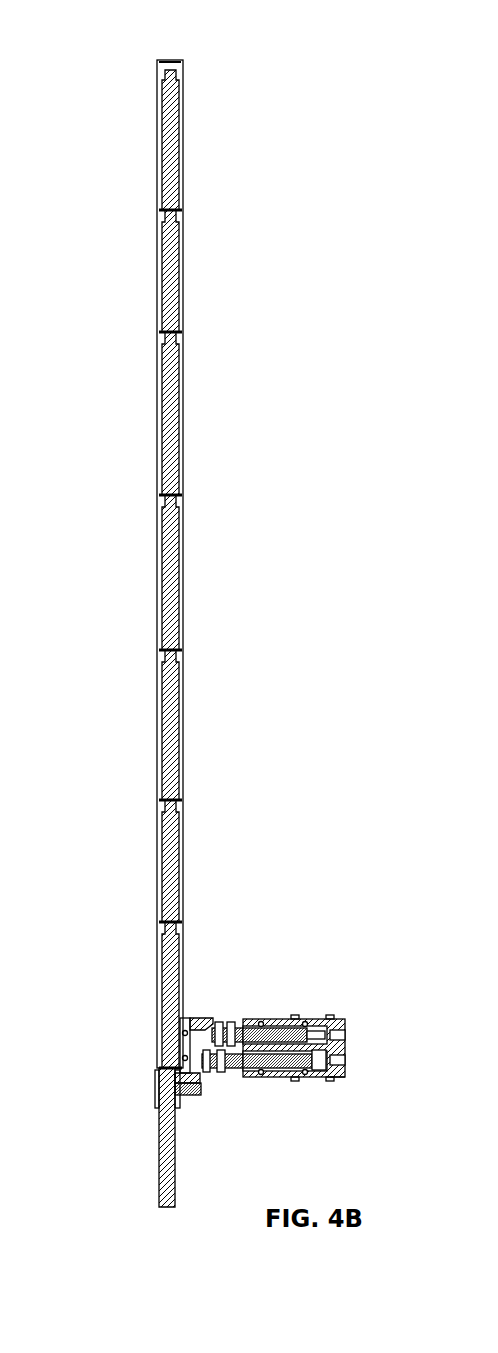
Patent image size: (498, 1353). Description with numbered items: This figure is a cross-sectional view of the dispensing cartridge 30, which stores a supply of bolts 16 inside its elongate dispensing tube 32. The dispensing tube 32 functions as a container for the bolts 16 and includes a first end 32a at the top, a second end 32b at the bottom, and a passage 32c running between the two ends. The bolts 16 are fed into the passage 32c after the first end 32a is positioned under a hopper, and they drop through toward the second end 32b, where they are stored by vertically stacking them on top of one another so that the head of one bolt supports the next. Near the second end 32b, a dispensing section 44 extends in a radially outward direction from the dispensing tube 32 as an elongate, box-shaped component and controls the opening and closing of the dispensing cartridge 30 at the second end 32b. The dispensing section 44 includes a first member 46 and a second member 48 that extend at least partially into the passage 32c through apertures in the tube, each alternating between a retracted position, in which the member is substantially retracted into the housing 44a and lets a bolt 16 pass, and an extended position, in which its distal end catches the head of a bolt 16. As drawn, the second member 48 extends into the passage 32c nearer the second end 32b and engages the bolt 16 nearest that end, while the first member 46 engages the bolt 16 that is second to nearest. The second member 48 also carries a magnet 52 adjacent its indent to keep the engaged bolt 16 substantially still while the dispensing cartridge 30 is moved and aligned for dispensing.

The dispensing cartridge 30 is at (104, 52).
The bolts 16 is at (169, 633).
The dispensing tube 32 is at (169, 633).
The first end 32a is at (204, 89).
The second end 32b is at (142, 1108).
The passage 32c is at (163, 156).
The dispensing section 44 is at (282, 1060).
The housing 44a is at (338, 1078).
The first member 46 is at (213, 1020).
The second member 48 is at (207, 1080).
The magnet 52 is at (199, 1086).